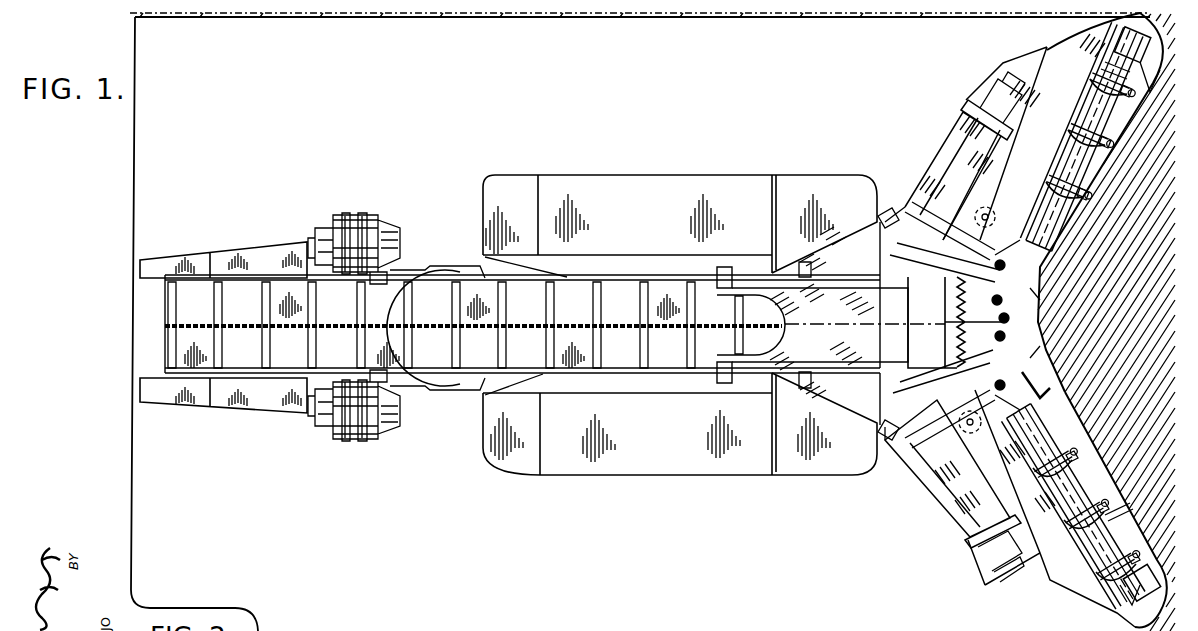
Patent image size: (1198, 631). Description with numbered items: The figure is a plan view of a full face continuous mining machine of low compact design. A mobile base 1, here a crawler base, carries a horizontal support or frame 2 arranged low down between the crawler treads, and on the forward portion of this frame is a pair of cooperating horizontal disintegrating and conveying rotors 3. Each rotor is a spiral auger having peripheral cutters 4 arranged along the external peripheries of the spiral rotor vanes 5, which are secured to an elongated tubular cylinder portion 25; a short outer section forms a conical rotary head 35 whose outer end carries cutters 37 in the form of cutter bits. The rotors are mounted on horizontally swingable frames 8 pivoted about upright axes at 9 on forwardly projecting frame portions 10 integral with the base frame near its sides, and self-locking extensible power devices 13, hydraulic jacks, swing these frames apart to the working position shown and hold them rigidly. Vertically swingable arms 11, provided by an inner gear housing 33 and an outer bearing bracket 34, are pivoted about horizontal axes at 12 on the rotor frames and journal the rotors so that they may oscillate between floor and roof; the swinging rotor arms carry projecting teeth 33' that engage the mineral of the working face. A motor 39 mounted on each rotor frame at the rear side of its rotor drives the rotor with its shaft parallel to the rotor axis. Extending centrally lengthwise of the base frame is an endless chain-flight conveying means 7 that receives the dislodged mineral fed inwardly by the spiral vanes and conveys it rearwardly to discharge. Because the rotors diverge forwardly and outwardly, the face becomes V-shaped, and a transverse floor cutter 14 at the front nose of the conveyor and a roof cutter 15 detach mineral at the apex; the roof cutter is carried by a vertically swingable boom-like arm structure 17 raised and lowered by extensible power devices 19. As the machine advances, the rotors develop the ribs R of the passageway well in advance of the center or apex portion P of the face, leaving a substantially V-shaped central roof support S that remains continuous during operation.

The mobile base 1 is at (684, 177).
The horizontal support or frame 2 is at (565, 207).
The disintegrating and conveying rotors 3 is at (1105, 78).
The peripheral cutters 4 is at (1085, 116).
The spiral rotor vanes 5 is at (1088, 138).
The endless chain-flight conveying means 7 is at (503, 342).
The horizontally swingable frames 8 is at (968, 133).
The upright pivot axis 9 is at (972, 212).
The forwardly projecting frame portions 10 is at (890, 196).
The vertically swingable arms 11 is at (1018, 76).
The horizontal pivot axis 12 is at (902, 466).
The extensible power devices 13 is at (878, 220).
The floor cutter 14 is at (1117, 514).
The roof cutter 15 is at (950, 300).
The boom-like frame or arm structure 17 is at (785, 290).
The extensible power devices 19 is at (806, 263).
The tubular cylinder portion 25 is at (1088, 96).
The inner gear housing 33 is at (969, 310).
The projecting teeth 33' is at (1050, 310).
The outer bearing bracket 34 is at (1140, 95).
The rotary head 35 is at (1141, 314).
The cutters 37 is at (1130, 18).
The motor 39 is at (958, 176).
The center or apex portion of the face P is at (950, 313).
The ribs R is at (992, 17).
The central roof support S is at (1080, 326).